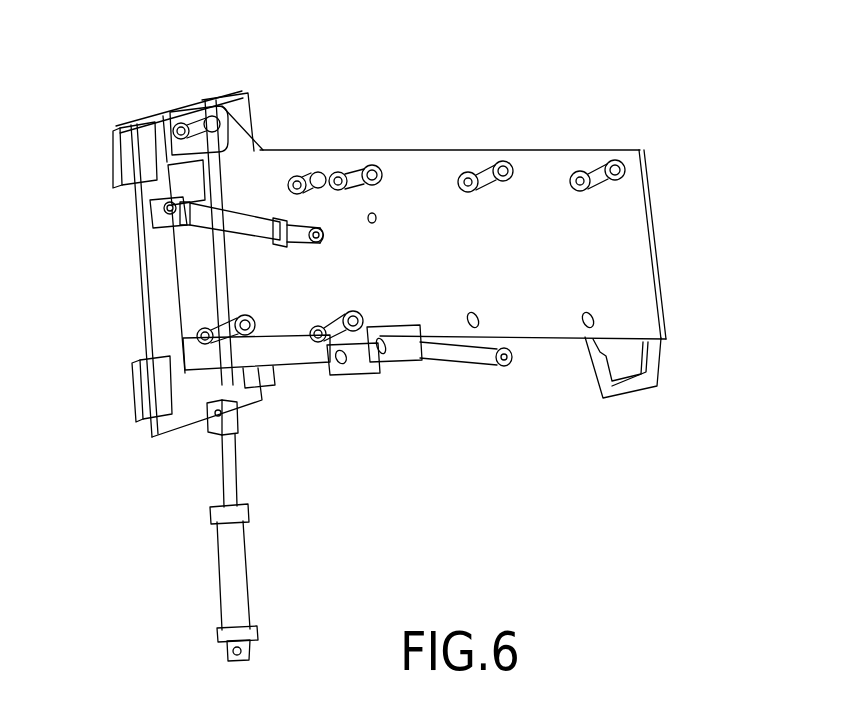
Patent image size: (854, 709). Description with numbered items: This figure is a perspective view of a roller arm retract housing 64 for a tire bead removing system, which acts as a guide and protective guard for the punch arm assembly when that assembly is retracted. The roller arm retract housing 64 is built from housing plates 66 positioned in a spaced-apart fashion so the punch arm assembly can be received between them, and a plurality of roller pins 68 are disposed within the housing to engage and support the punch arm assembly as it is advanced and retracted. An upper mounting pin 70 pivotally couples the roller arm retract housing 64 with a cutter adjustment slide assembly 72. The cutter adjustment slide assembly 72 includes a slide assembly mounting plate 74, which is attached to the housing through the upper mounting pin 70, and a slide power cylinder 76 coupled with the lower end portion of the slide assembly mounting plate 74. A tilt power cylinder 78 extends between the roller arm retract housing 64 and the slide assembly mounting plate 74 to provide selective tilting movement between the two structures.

The roller arm retract housing 64 is at (732, 77).
The housing plates 66 is at (426, 166).
The roller pins 68 is at (347, 154).
The upper mounting pin 70 is at (203, 112).
The cutter adjustment slide assembly 72 is at (103, 207).
The slide assembly mounting plate 74 is at (154, 322).
The slide power cylinder 76 is at (238, 563).
The tilt power cylinder 78 is at (228, 222).